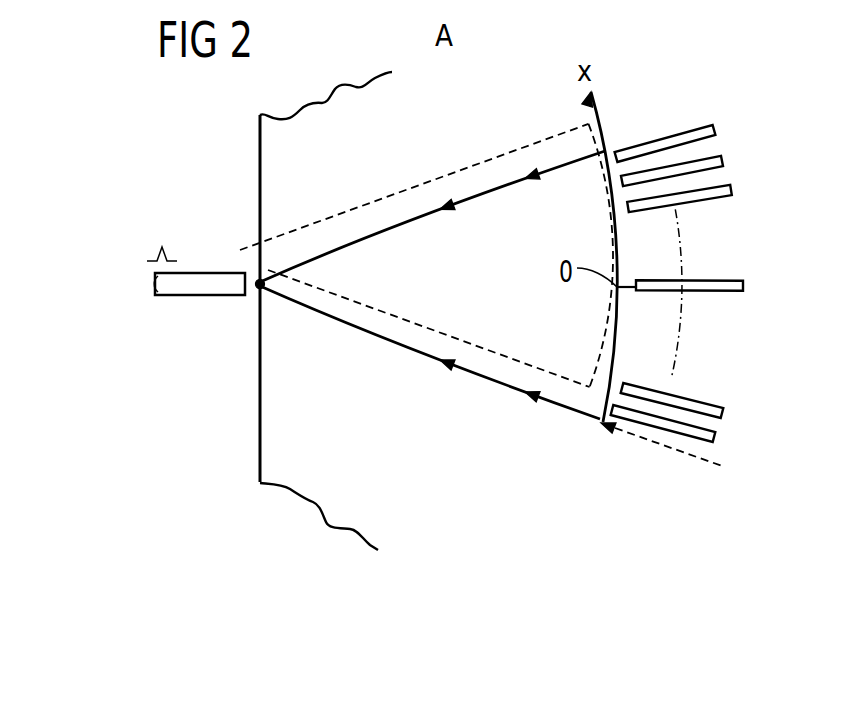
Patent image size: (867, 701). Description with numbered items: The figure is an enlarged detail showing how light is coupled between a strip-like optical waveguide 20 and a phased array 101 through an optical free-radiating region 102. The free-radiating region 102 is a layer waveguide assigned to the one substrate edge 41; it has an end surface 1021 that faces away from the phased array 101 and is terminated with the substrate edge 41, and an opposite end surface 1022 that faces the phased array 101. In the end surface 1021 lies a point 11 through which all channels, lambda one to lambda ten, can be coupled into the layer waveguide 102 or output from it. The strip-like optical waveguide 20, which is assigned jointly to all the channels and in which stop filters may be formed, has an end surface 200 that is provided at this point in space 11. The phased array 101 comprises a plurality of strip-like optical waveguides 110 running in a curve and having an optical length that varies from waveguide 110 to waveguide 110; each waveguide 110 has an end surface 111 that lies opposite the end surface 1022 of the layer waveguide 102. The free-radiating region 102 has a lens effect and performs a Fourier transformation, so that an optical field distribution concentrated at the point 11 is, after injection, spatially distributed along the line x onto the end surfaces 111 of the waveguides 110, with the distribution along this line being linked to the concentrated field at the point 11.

The strip-like optical waveguide 20 is at (170, 290).
The end surface 200 is at (257, 289).
The substrate edge 41 is at (260, 428).
The point 11 is at (264, 284).
The optical free-radiating region 102 is at (476, 196).
The end surface 1021 is at (240, 250).
The end surface 1022 is at (620, 303).
The end surface 111 is at (606, 163).
The phased array 101 is at (652, 137).
The strip-like optical waveguides 110 is at (684, 135).